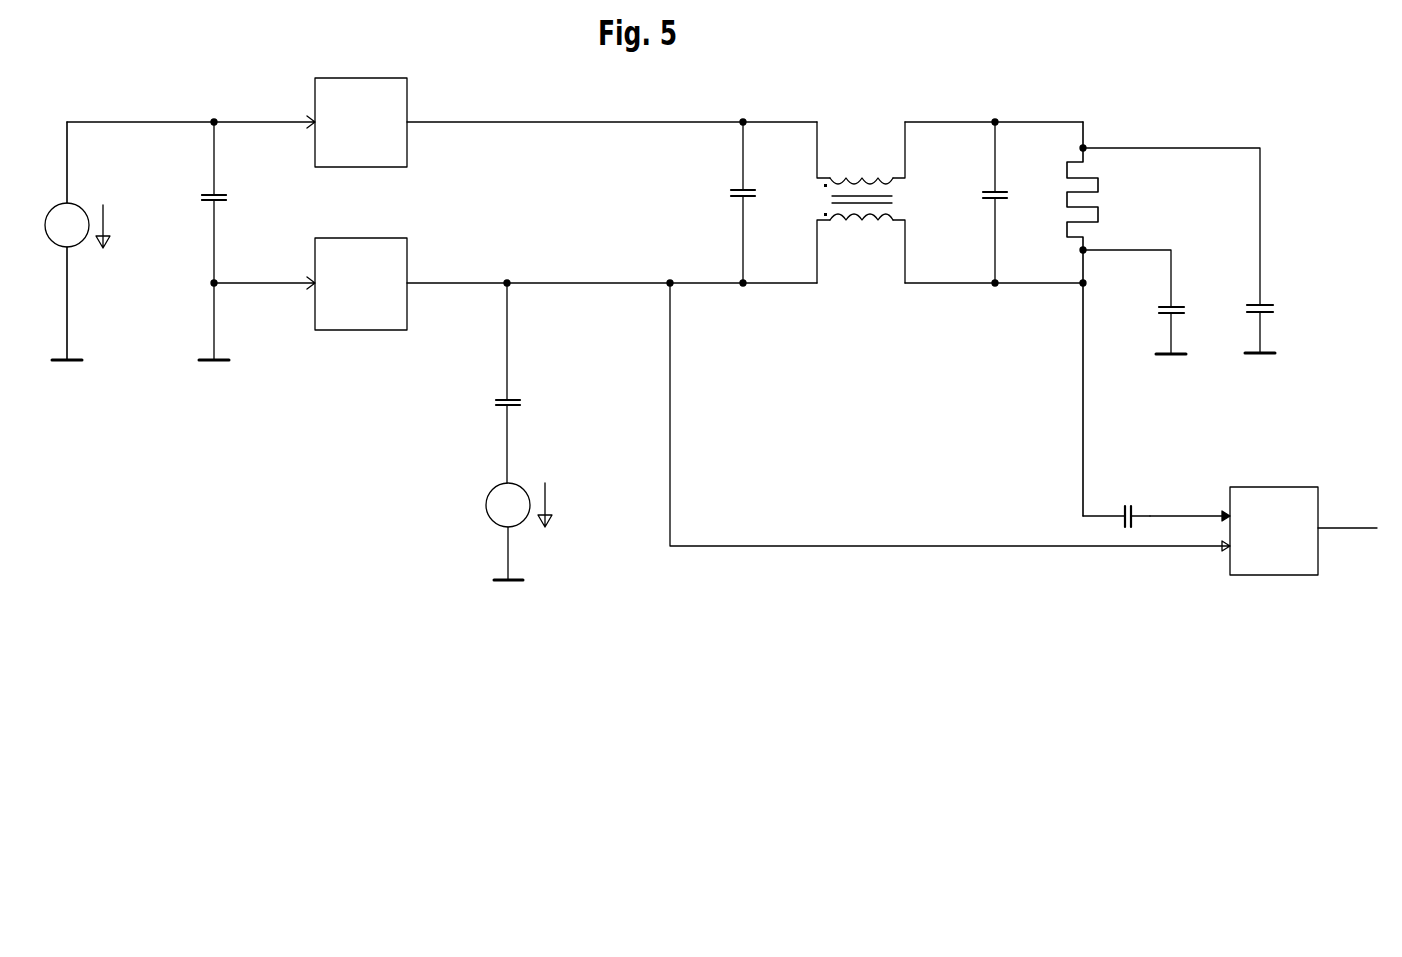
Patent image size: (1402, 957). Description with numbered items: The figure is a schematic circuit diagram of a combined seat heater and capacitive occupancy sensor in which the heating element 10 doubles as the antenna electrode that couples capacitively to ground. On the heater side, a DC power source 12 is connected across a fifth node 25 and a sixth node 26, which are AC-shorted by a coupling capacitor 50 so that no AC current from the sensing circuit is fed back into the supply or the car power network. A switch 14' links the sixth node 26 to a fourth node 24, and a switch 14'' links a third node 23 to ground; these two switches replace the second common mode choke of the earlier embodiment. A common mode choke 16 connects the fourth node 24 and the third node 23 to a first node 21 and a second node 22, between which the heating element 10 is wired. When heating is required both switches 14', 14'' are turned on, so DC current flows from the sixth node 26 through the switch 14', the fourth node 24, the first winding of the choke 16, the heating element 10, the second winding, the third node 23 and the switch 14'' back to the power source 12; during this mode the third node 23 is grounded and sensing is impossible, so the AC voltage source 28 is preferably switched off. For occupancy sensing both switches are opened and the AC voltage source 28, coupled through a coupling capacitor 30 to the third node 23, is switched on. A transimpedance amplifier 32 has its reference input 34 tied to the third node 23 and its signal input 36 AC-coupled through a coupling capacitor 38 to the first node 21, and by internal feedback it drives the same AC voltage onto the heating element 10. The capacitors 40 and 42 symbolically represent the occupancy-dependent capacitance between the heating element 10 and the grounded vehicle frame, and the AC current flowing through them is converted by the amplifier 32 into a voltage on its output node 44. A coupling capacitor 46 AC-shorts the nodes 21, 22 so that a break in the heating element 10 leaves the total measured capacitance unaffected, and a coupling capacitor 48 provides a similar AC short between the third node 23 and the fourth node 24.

The heating element 10 is at (1098, 213).
The power source 12 is at (75, 246).
The switch 14' is at (364, 150).
The switch 14'' is at (368, 312).
The common mode choke 16 is at (856, 222).
The first node 21 is at (945, 281).
The second node 22 is at (930, 122).
The third node 23 is at (545, 283).
The fourth node 24 is at (523, 122).
The fifth node 25 is at (205, 283).
The sixth node 26 is at (236, 121).
The AC voltage source 28 is at (490, 495).
The coupling capacitor 30 is at (508, 395).
The transimpedance amplifier 32 is at (1264, 487).
The reference input 34 is at (1090, 546).
The signal input 36 is at (1175, 513).
The coupling capacitor 38 is at (1135, 503).
The capacitor 40 is at (1172, 300).
The capacitor 42 is at (1256, 312).
The output node 44 is at (1335, 528).
The coupling capacitor 46 is at (1005, 190).
The coupling capacitor 48 is at (735, 197).
The coupling capacitor 50 is at (221, 206).